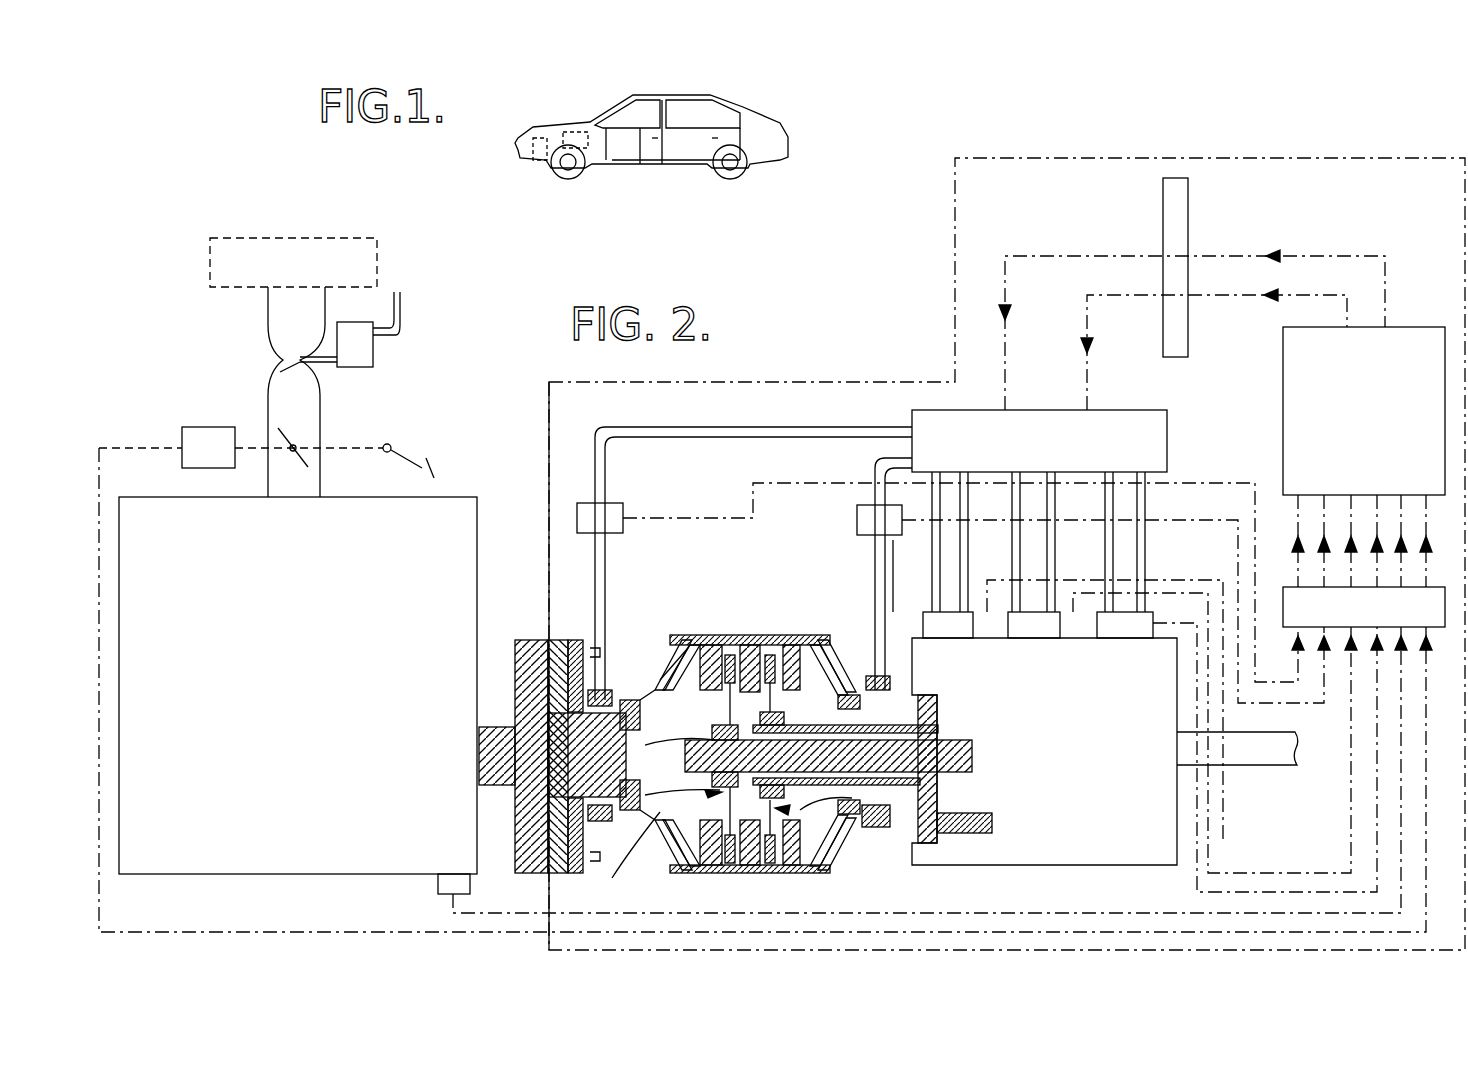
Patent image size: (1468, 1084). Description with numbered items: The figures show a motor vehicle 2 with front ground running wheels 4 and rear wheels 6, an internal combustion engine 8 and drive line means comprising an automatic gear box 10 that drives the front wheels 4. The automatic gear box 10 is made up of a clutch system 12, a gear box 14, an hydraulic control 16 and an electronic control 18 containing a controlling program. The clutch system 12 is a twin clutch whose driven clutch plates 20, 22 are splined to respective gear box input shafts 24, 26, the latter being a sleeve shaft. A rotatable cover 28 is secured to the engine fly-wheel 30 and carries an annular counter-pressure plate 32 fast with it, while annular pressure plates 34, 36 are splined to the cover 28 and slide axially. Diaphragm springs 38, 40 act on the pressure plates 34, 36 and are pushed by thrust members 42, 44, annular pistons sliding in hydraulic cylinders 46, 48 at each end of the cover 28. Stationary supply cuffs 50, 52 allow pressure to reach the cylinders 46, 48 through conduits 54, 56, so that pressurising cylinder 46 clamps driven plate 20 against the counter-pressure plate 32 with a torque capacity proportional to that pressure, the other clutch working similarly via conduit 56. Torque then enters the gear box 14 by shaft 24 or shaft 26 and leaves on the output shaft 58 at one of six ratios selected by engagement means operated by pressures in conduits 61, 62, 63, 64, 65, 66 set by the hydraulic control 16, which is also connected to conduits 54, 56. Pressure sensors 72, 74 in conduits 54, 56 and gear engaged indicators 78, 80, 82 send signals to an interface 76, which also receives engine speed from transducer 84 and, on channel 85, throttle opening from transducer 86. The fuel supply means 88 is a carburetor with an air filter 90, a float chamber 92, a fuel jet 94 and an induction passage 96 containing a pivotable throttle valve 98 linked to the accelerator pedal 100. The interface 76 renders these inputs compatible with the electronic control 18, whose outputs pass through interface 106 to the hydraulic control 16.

In FIG. 1, the motor vehicle 2 is at (746, 100).
In FIG. 1, the front ground running wheels 4 is at (562, 176).
In FIG. 1, the rear wheels 6 is at (738, 178).
In FIG. 1, the internal combustion engine 8 is at (568, 123).
In FIG. 2, the internal combustion engine 8 is at (220, 876).
In FIG. 1, the automatic gear box 10 is at (535, 130).
In FIG. 2, the automatic gear box 10 is at (866, 375).
In FIG. 2, the clutch system 12 is at (808, 722).
In FIG. 2, the gear box 14 is at (1040, 878).
In FIG. 2, the hydraulic control 16 is at (1153, 410).
In FIG. 2, the electronic control 18 is at (1278, 392).
In FIG. 2, the driven clutch plate 20 is at (712, 640).
In FIG. 2, the driven clutch plate 22 is at (772, 640).
In FIG. 2, the gear box input shaft 24 is at (975, 773).
In FIG. 2, the gear box input shaft 26 is at (918, 690).
In FIG. 2, the rotatable cover 28 is at (686, 636).
In FIG. 2, the engine fly-wheel 30 is at (531, 642).
In FIG. 2, the annular clutch counter-pressure plate 32 is at (752, 875).
In FIG. 2, the annular clutch pressure plate 34 is at (700, 875).
In FIG. 2, the annular clutch pressure plate 36 is at (796, 873).
In FIG. 2, the diaphragm spring 38 is at (688, 672).
In FIG. 2, the diaphragm spring 40 is at (850, 872).
In FIG. 2, the thrust member 42 is at (672, 700).
In FIG. 2, the thrust member 44 is at (818, 690).
In FIG. 2, the hydraulic cylinder 46 is at (648, 812).
In FIG. 2, the hydraulic cylinder 48 is at (862, 820).
In FIG. 2, the hydraulic supply cuff 50 is at (583, 640).
In FIG. 2, the hydraulic supply cuff 52 is at (906, 576).
In FIG. 2, the conduit 54 is at (606, 556).
In FIG. 2, the conduit 56 is at (876, 562).
In FIG. 2, the output shaft 58 is at (1255, 766).
In FIG. 2, the conduit 61 is at (932, 558).
In FIG. 2, the conduit 62 is at (1015, 545).
In FIG. 2, the conduit 63 is at (968, 580).
In FIG. 2, the conduit 64 is at (1052, 538).
In FIG. 2, the conduit 65 is at (1105, 570).
In FIG. 2, the conduit 66 is at (1148, 560).
In FIG. 2, the hydraulic pressure sensor 72 is at (617, 505).
In FIG. 2, the hydraulic pressure sensor 74 is at (860, 508).
In FIG. 2, the interface 76 is at (1295, 590).
In FIG. 2, the gear engaged indicator 78 is at (940, 628).
In FIG. 2, the gear engaged indicator 80 is at (1018, 628).
In FIG. 2, the gear engaged indicator 82 is at (1118, 628).
In FIG. 2, the transducer 84 is at (438, 882).
In FIG. 2, the channel 85 is at (128, 450).
In FIG. 2, the transducer 86 is at (198, 428).
In FIG. 2, the fuel supply means 88 is at (262, 356).
In FIG. 2, the air filter 90 is at (365, 252).
In FIG. 2, the float chamber 92 is at (366, 352).
In FIG. 2, the fuel jet 94 is at (283, 372).
In FIG. 2, the induction passage 96 is at (322, 398).
In FIG. 2, the throttle valve 98 is at (300, 470).
In FIG. 2, the accelerator pedal 100 is at (432, 470).
In FIG. 2, the interface 106 is at (1188, 196).